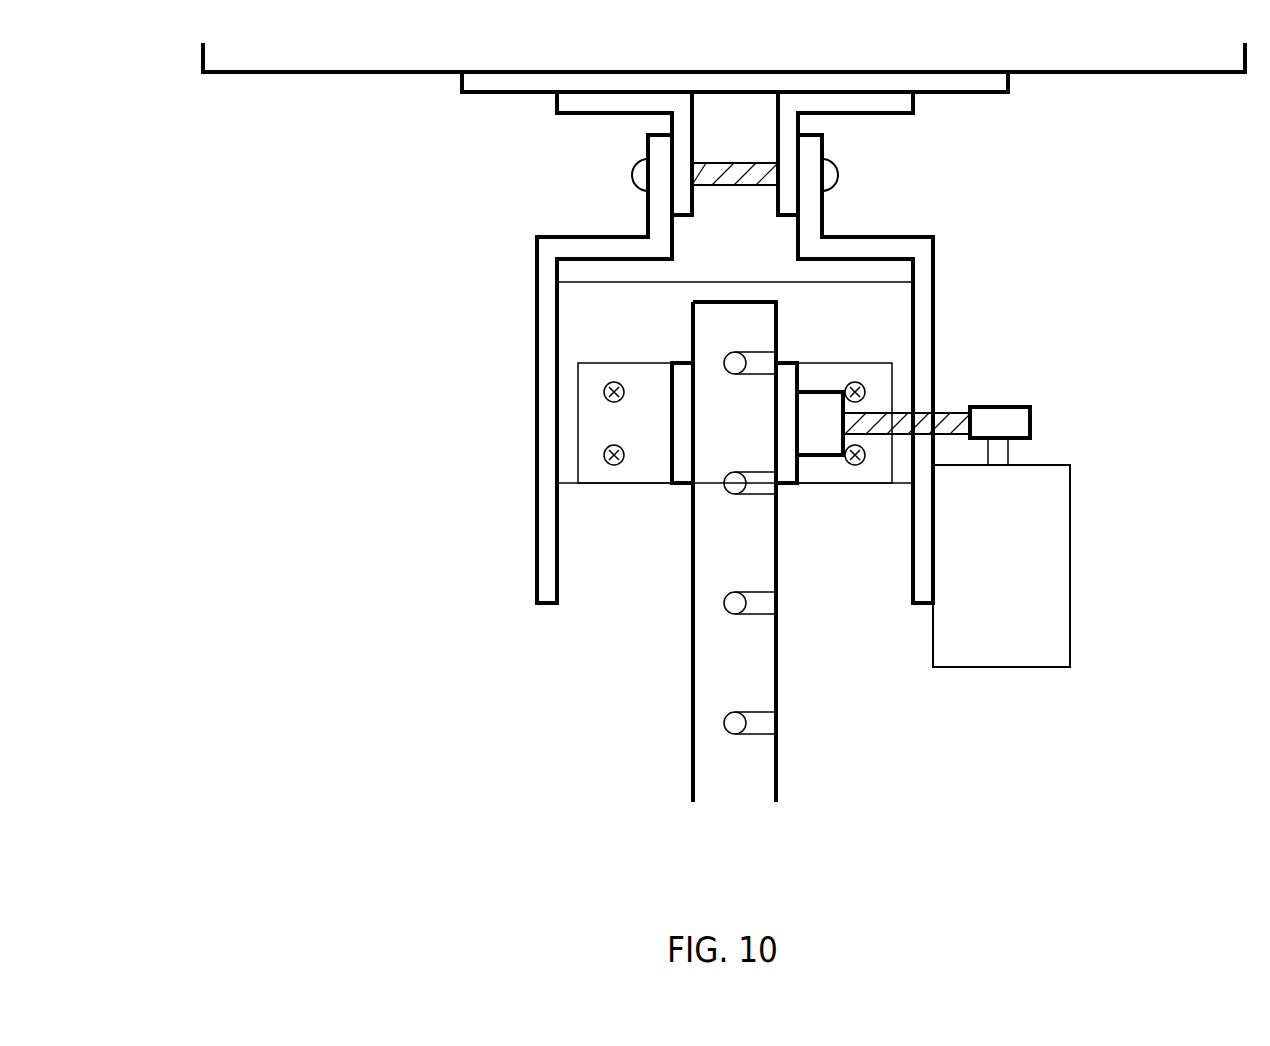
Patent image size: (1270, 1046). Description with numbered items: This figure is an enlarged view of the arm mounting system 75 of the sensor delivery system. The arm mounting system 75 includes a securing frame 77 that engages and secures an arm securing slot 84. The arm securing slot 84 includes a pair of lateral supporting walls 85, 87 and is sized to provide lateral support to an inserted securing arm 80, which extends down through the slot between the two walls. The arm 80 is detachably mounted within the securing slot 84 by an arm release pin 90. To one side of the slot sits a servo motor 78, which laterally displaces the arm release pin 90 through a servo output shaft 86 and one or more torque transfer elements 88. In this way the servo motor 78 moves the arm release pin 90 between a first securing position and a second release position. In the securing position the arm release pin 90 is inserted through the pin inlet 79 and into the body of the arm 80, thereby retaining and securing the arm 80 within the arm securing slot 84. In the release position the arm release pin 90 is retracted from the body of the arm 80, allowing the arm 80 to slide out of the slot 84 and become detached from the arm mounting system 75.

The arm mounting system 75 is at (547, 283).
The securing frame 77 is at (557, 540).
The servo motor 78 is at (1048, 568).
The pin inlet 79 is at (832, 430).
The securing arm 80 is at (748, 660).
The arm securing slot 84 is at (683, 440).
The lateral supporting wall 85 is at (680, 376).
The servo output shaft 86 is at (1006, 446).
The lateral supporting wall 87 is at (787, 380).
The torque transfer element 88 is at (1017, 420).
The arm release pin 90 is at (903, 425).